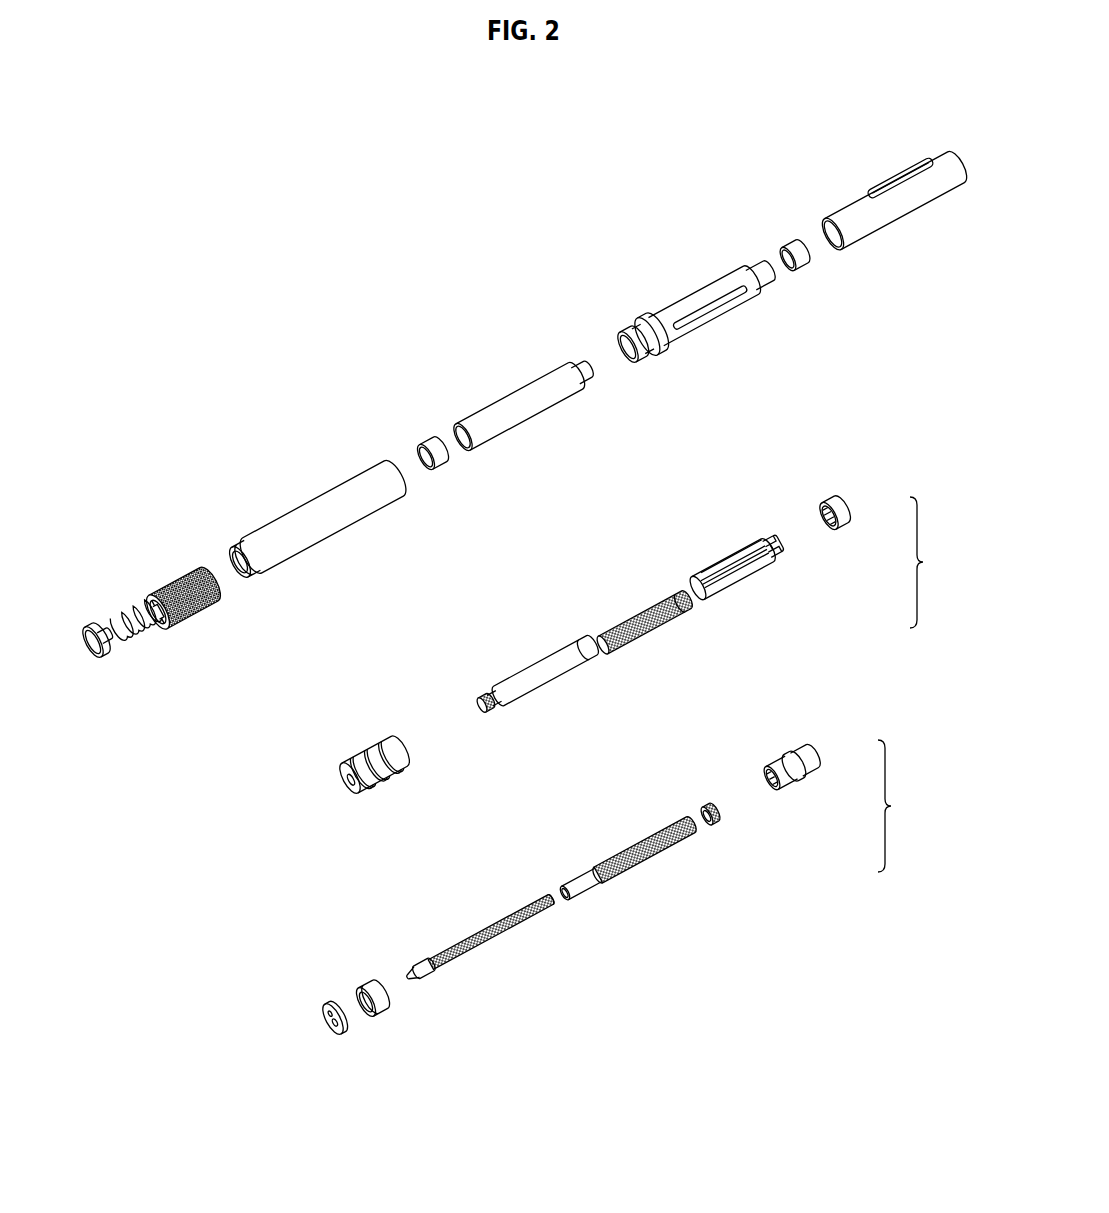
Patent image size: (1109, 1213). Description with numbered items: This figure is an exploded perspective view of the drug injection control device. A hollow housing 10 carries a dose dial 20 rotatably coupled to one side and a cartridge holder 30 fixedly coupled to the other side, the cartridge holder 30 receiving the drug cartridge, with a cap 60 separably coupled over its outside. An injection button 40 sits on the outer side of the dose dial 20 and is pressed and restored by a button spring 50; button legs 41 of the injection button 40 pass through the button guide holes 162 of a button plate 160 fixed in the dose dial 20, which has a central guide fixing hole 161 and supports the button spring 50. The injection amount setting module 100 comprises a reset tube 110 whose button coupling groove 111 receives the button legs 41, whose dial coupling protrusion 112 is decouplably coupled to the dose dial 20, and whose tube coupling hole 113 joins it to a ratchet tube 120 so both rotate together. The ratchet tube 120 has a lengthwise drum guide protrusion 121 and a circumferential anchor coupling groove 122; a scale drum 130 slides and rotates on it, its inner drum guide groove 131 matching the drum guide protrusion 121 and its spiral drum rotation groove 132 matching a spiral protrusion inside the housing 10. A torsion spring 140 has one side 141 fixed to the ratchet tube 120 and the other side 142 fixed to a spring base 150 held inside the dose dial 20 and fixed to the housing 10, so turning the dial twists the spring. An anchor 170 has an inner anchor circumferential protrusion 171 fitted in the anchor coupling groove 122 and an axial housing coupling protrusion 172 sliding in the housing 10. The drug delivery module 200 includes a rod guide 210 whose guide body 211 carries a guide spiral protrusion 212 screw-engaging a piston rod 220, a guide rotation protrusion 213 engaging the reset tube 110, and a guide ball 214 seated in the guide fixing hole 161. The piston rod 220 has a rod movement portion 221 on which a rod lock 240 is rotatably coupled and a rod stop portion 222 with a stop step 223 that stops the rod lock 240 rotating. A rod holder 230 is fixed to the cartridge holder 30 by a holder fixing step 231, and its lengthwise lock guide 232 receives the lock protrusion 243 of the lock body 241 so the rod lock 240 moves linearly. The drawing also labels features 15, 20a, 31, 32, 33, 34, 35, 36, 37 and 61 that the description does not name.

The housing 10 is at (320, 513).
The coupling end of housing 15 is at (252, 578).
The dose dial 20 is at (181, 586).
The knob recess 20a is at (148, 625).
The cartridge holder 30 is at (702, 303).
The holder flange ring 31 is at (668, 345).
The holder body with slot 32 is at (715, 323).
The holder end nub 33 is at (760, 290).
The holder end cap 34 is at (640, 350).
The inner tube 35 is at (510, 400).
The ring 36 is at (793, 240).
The ring 37 is at (427, 435).
The injection button 40 is at (108, 612).
The button legs 41 is at (112, 650).
The button spring 50 is at (128, 598).
The cap 60 is at (882, 175).
The sleeve slot 61 is at (905, 170).
The injection amount setting module 100 is at (699, 584).
The reset tube 110 is at (531, 671).
The button coupling groove 111 is at (490, 690).
The dial coupling protrusion 112 is at (495, 712).
The tube coupling hole 113 is at (593, 660).
The ratchet tube 120 is at (748, 551).
The drum guide protrusion 121 is at (738, 585).
The anchor coupling groove 122 is at (777, 565).
The scale drum 130 is at (351, 736).
The drum guide groove 131 is at (345, 775).
The drum rotation groove 132 is at (380, 745).
The torsion spring 140 is at (652, 610).
The one side of the torsion spring 141 is at (686, 608).
The other side of the torsion spring 142 is at (605, 650).
The spring base 150 is at (369, 978).
The button plate 160 is at (316, 999).
The guide fixing hole 161 is at (334, 1036).
The button guide holes 162 is at (322, 1015).
The anchor 170 is at (849, 490).
The anchor circumferential protrusion 171 is at (835, 535).
The housing coupling protrusion 172 is at (858, 510).
The drug delivery module 200 is at (631, 869).
The rod guide 210 is at (461, 956).
The guide body 211 is at (493, 924).
The guide spiral protrusion 212 is at (525, 905).
The guide rotation protrusion 213 is at (422, 987).
The guide ball 214 is at (405, 984).
The piston rod 220 is at (616, 868).
The rod movement portion 221 is at (643, 840).
The rod stop portion 222 is at (568, 898).
The stop step 223 is at (601, 885).
The rod holder 230 is at (803, 783).
The holder fixing step 231 is at (781, 754).
The lock guide 232 is at (816, 769).
The rod lock 240 is at (729, 817).
The lock body 241 is at (722, 805).
The lock protrusion 243 is at (706, 808).